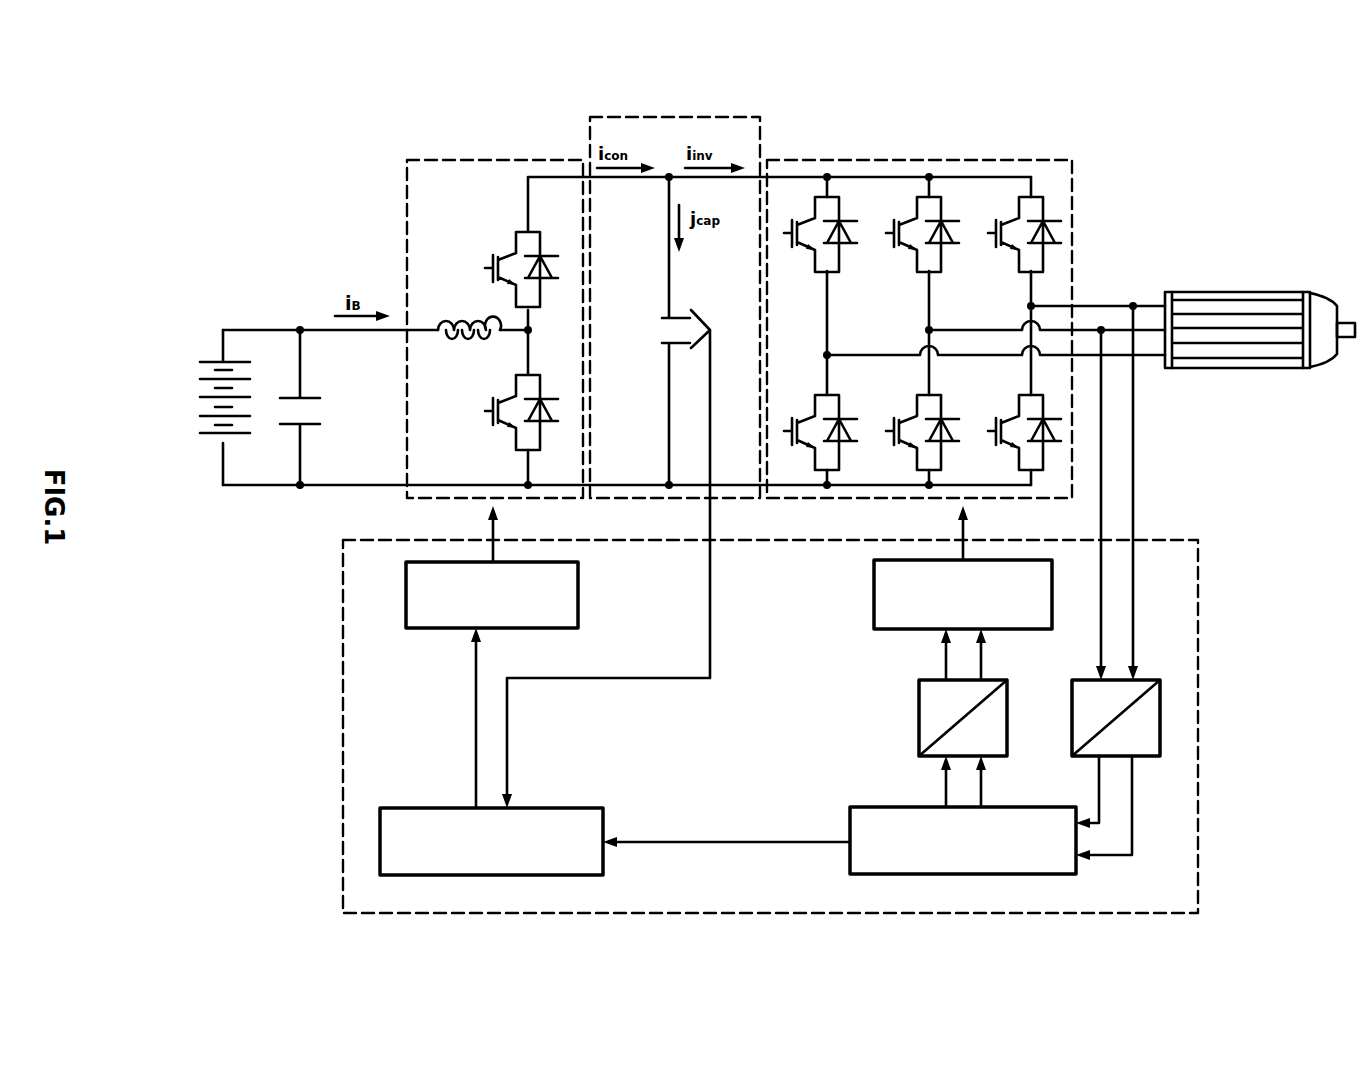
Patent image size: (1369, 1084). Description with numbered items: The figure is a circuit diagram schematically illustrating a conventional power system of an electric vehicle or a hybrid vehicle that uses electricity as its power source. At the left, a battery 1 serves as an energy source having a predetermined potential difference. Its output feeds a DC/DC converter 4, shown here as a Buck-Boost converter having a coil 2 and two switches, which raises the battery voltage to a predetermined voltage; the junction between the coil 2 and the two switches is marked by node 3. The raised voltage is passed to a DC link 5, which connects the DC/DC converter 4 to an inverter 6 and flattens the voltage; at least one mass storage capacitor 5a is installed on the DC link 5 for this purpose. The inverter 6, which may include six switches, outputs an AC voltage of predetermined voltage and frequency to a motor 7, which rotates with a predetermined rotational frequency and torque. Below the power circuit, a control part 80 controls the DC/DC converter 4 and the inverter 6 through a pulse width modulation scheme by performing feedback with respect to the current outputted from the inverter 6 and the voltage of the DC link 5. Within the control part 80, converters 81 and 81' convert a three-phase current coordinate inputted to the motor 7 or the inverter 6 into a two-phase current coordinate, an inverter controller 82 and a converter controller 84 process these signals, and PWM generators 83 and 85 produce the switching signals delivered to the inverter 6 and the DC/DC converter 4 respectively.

The battery 1 is at (195, 380).
The coil 2 is at (465, 322).
The connection node 3 is at (525, 333).
The DC/DC converter 4 is at (493, 160).
The DC link 5 is at (672, 117).
The mass storage capacitor 5a is at (703, 312).
The inverter 6 is at (918, 160).
The motor 7 is at (1237, 292).
The control part 80 is at (1183, 540).
The converter 81 is at (1168, 739).
The converter 81' is at (915, 714).
The inverter controller 82 is at (963, 874).
The PWM generator 83 is at (874, 593).
The converter controller 84 is at (380, 842).
The PWM generator 85 is at (578, 593).